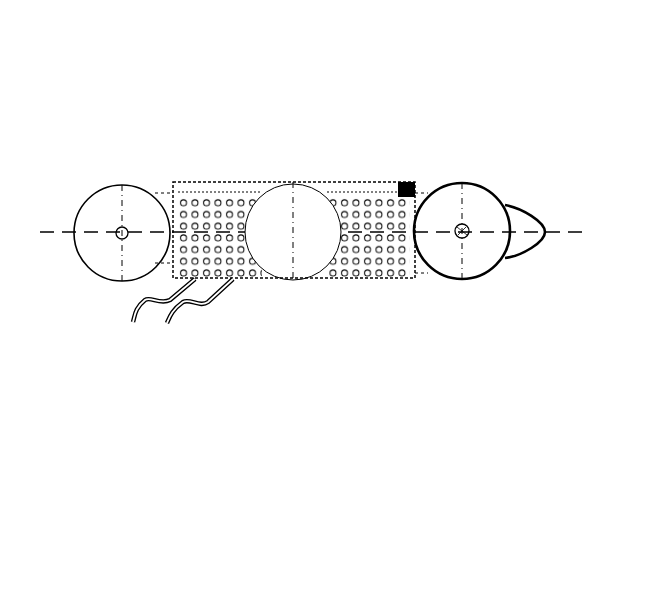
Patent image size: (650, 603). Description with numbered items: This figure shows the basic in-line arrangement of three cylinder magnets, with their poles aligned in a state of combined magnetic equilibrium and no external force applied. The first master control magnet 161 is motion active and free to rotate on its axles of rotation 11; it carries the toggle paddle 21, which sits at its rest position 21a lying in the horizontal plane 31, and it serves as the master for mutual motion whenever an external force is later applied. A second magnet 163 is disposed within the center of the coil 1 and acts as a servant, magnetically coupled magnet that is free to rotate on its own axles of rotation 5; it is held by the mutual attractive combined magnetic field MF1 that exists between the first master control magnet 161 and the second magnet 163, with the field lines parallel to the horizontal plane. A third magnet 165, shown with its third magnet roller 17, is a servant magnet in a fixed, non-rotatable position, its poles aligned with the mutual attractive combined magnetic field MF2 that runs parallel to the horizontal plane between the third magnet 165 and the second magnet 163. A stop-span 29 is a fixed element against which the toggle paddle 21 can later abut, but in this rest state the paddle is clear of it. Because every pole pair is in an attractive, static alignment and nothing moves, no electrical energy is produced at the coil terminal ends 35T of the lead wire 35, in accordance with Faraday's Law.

The coil 1 is at (345, 182).
The axles of rotation 5 is at (293, 182).
The axles of rotation 11 is at (470, 236).
The third magnet roller 17 is at (83, 215).
The toggle paddle 21 is at (545, 214).
The rest position 21a is at (520, 212).
The stop-span 29 is at (410, 182).
The horizontal plane 31 is at (583, 233).
The lead wire 35 is at (261, 323).
The coil terminal ends 35T is at (150, 301).
The first master control magnet 161 is at (472, 180).
The second magnet 163 is at (245, 278).
The third magnet 165 is at (137, 183).
The combined magnetic field MF1 is at (337, 182).
The combined magnetic field MF2 is at (222, 182).